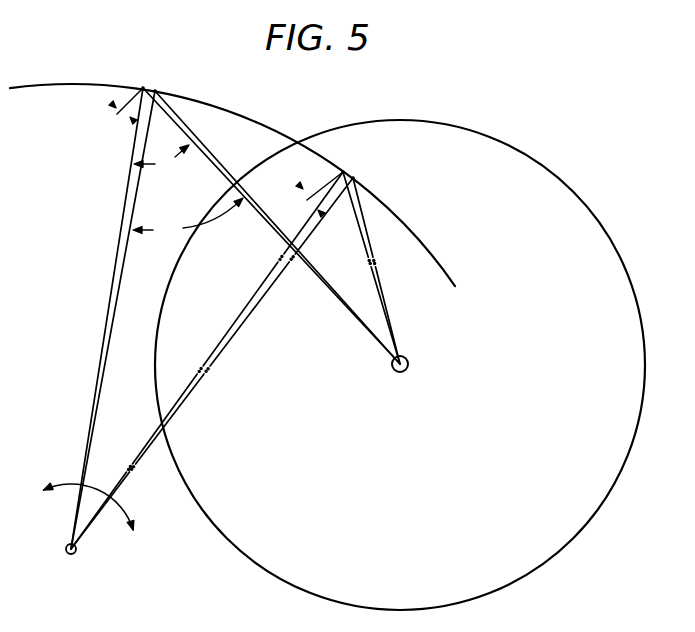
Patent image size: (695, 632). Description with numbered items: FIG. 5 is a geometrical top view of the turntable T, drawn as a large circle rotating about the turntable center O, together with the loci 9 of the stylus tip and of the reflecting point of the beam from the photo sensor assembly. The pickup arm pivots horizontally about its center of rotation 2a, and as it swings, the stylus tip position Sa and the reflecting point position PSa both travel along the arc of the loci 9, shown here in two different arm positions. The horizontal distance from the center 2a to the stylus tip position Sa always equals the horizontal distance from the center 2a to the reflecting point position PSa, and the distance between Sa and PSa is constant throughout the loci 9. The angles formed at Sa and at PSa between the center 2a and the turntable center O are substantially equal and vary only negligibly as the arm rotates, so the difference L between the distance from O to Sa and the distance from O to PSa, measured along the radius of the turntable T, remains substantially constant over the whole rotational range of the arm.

The turntable T is at (625, 308).
The center of rotation of the turntable O is at (403, 371).
The center of rotation of the pickup arm 2a is at (66, 556).
The loci of the stylus tip position and the reflecting point 9 is at (218, 107).
The stylus tip position Sa is at (143, 88).
The reflecting point position PSa is at (155, 91).
The difference in distance L is at (117, 116).